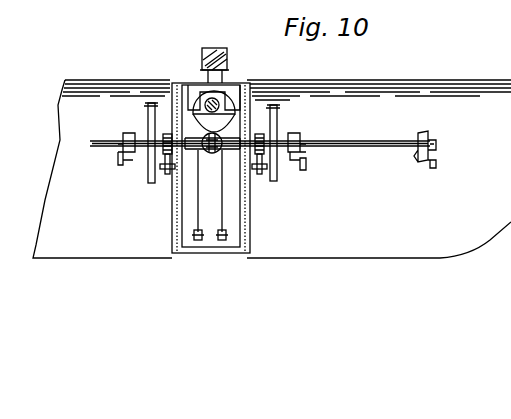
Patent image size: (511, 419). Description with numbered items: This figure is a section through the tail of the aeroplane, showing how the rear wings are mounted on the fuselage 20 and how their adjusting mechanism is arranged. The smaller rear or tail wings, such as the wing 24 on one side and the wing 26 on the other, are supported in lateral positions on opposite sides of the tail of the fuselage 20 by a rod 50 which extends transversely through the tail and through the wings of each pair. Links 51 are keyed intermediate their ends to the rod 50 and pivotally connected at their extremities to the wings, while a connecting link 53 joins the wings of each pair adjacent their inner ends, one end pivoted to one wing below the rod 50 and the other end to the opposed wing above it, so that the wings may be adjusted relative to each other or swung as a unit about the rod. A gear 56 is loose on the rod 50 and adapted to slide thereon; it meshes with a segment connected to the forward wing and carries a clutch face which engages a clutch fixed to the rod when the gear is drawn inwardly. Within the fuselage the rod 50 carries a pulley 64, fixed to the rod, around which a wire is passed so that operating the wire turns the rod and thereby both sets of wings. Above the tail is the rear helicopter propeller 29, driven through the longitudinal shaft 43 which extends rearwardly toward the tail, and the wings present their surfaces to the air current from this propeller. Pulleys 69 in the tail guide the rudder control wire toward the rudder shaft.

The fuselage 20 is at (213, 254).
The rear wing 24 is at (98, 80).
The rear wing 26 is at (423, 82).
The rear helicopter propeller 29 is at (216, 47).
The longitudinal shaft 43 is at (219, 102).
The rod 50 is at (351, 147).
The link 51 is at (420, 160).
The connecting link 53 is at (150, 120).
The gear 56 is at (165, 128).
The pulley 64 is at (208, 152).
The pulley 69 is at (196, 242).